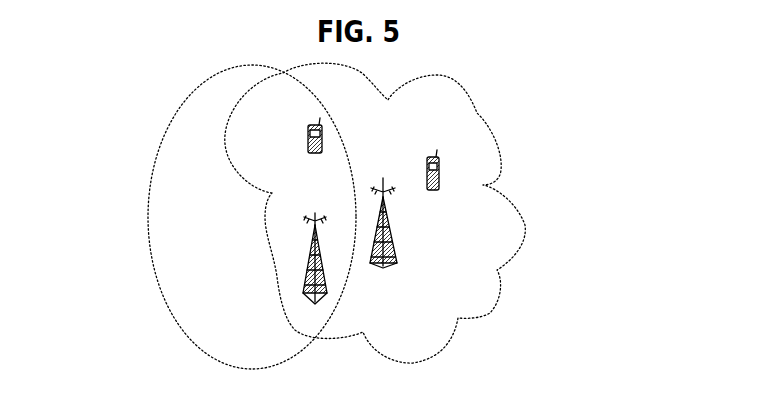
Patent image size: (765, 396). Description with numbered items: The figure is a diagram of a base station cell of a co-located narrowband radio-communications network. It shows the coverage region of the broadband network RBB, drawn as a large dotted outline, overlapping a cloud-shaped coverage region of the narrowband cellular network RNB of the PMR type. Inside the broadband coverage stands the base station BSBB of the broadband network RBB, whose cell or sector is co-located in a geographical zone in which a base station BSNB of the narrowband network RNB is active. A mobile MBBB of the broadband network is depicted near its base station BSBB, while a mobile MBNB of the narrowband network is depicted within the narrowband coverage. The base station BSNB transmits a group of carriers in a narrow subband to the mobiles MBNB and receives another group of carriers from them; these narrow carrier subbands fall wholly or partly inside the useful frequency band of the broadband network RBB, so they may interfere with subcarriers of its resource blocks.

The broadband network RBB is at (150, 176).
The narrowband cellular radio-communications network RNB is at (530, 232).
The mobile of the broadband network MBBB is at (314, 149).
The mobiles of the narrowband network MBNB is at (433, 182).
The base station of the broadband network BSBB is at (317, 306).
The base station of the narrowband network BSNB is at (384, 275).